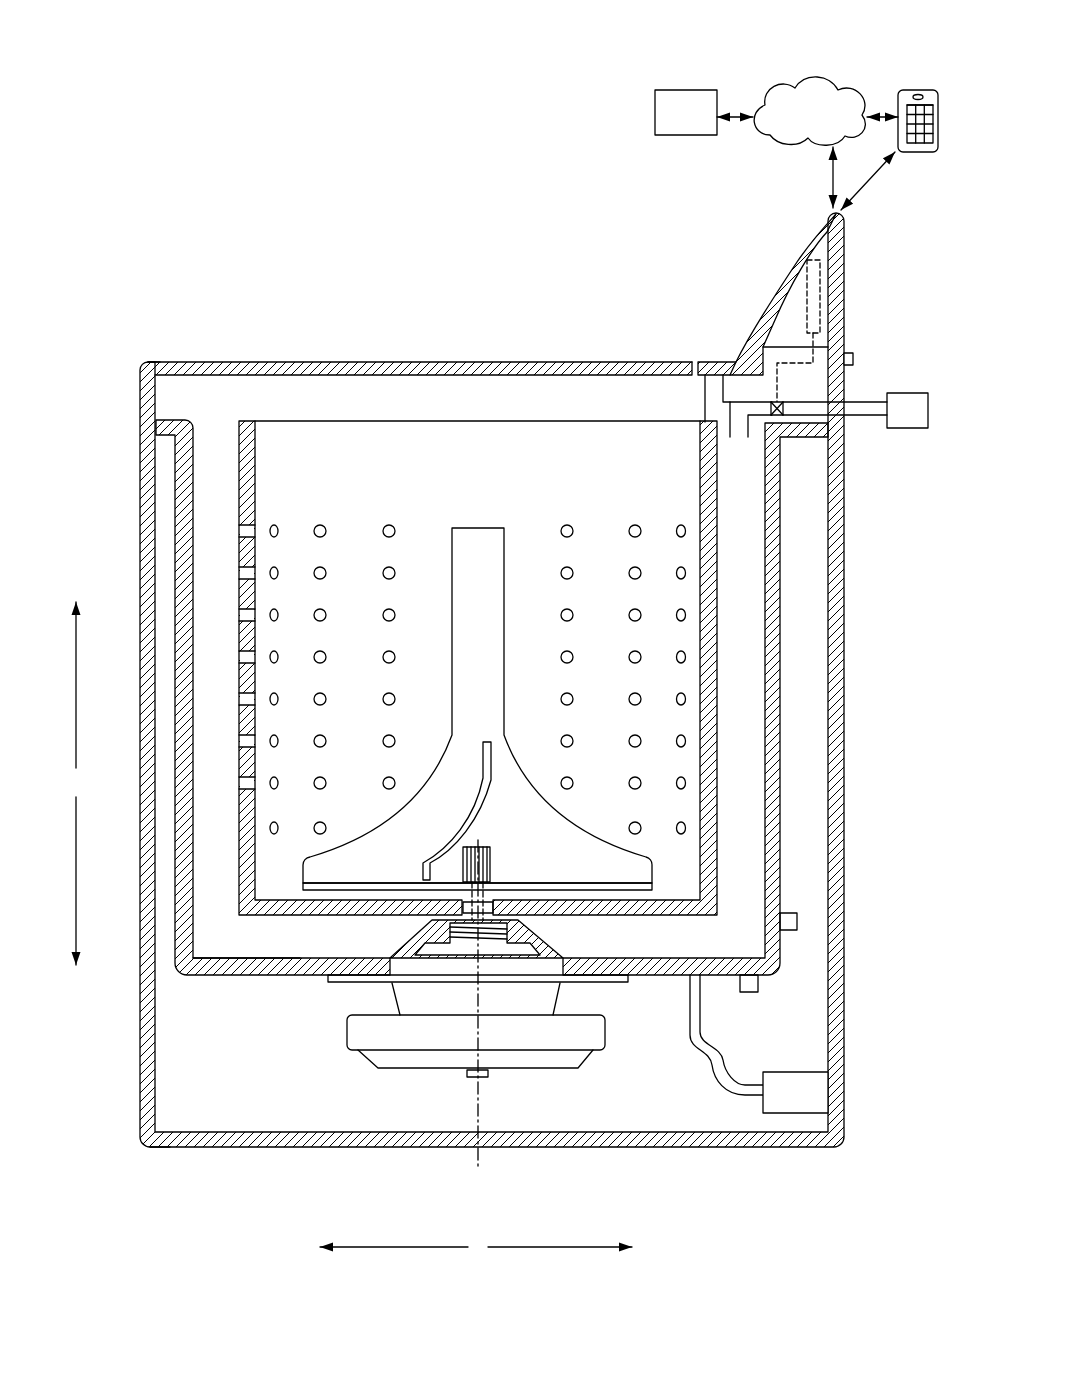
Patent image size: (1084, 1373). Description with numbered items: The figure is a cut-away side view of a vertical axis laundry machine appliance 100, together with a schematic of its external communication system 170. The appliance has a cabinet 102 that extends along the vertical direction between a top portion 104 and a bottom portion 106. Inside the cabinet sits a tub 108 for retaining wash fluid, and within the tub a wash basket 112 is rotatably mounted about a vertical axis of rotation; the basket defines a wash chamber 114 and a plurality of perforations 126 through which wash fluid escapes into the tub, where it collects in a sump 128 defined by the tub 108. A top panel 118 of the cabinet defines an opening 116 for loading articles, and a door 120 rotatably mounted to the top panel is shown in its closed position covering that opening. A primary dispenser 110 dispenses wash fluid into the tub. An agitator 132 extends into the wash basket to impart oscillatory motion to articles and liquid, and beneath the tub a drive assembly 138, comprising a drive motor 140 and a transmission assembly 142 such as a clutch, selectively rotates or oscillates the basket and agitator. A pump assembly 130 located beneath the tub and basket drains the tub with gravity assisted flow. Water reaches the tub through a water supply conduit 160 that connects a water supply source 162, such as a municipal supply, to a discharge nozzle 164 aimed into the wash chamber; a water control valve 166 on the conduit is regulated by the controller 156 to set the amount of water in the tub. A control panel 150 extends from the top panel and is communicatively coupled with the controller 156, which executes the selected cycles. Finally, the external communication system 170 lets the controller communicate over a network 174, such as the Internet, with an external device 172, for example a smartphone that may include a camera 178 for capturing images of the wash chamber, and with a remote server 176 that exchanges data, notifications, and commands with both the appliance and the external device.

The laundry machine appliance 100 is at (180, 240).
The cabinet 102 is at (150, 468).
The top portion 104 is at (138, 370).
The bottom portion 106 is at (126, 1143).
The tub 108 is at (780, 820).
The primary dispenser 110 is at (722, 405).
The wash basket 112 is at (238, 447).
The wash chamber 114 is at (293, 474).
The opening 116 is at (560, 418).
The top panel 118 is at (183, 360).
The door 120 is at (365, 360).
The perforations 126 is at (399, 516).
The sump 128 is at (301, 950).
The pump assembly 130 is at (744, 1102).
The agitator 132 is at (487, 535).
The drive assembly 138 is at (423, 1004).
The drive motor 140 is at (600, 1035).
The transmission assembly 142 is at (545, 983).
The control panel 150 is at (802, 287).
The controller 156 is at (822, 272).
The water supply conduit 160 is at (865, 418).
The water supply source 162 is at (890, 425).
The discharge nozzle 164 is at (741, 452).
The water control valve 166 is at (787, 410).
The external communication system 170 is at (808, 105).
The external device 172 is at (939, 103).
The network 174 is at (790, 131).
The remote server 176 is at (668, 129).
The camera 178 is at (913, 92).